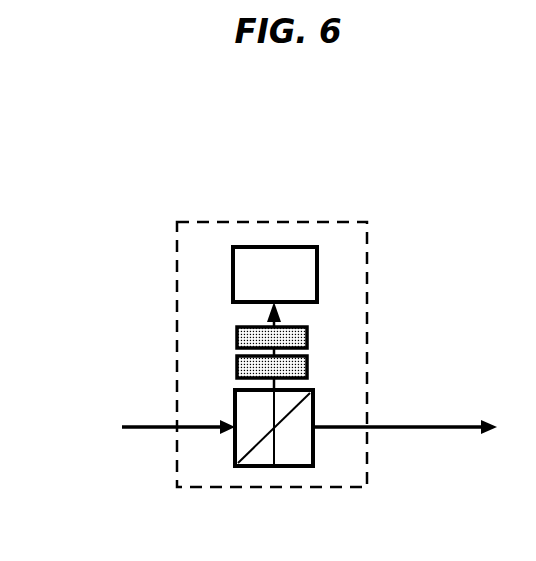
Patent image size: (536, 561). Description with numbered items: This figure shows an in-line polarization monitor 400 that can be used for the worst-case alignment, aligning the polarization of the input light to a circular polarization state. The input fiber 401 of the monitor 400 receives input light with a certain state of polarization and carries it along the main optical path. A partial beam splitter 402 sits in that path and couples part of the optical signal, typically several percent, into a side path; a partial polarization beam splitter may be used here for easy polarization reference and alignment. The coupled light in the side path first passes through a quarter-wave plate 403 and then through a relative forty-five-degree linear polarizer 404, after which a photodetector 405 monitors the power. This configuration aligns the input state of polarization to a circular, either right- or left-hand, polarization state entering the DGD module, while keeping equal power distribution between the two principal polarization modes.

The polarization monitor 400 is at (277, 226).
The input fiber 401 is at (146, 417).
The partial beam splitter 402 is at (275, 440).
The quarter-wave plate 403 is at (237, 366).
The 45-degree linear polarizer 404 is at (237, 327).
The photodetector 405 is at (236, 250).